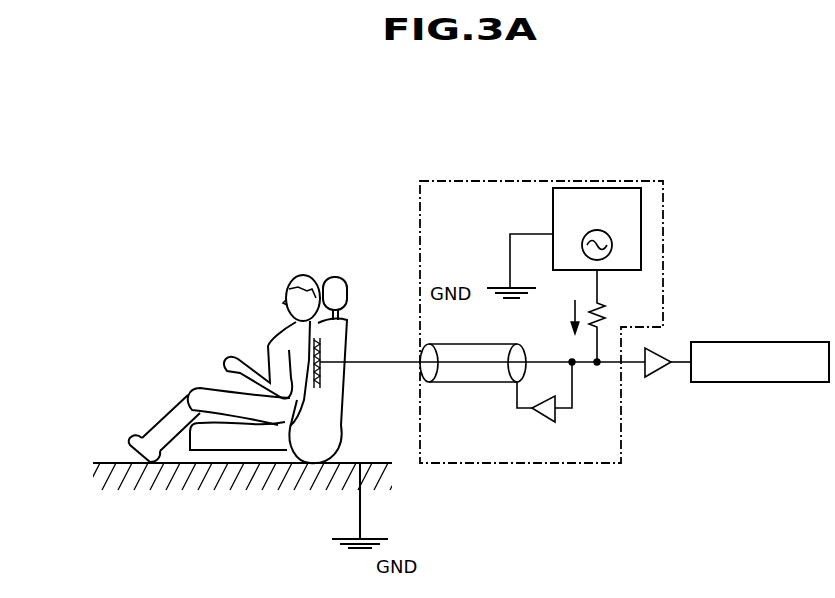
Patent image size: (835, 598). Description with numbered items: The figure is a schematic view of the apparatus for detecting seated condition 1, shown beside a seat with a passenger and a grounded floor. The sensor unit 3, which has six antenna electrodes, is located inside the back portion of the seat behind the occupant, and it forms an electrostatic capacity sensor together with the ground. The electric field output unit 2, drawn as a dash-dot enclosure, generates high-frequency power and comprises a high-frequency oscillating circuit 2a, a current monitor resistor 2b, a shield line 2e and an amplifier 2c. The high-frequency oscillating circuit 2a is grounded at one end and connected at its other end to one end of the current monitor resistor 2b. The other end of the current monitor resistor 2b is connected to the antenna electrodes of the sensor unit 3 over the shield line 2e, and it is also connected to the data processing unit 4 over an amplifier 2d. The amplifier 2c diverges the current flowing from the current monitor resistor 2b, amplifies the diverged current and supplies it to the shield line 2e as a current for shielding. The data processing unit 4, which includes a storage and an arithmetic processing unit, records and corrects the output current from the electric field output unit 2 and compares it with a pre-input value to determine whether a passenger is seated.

The apparatus for detecting seated condition 1 is at (574, 275).
The electric field output unit 2 is at (583, 182).
The high-frequency oscillating circuit 2a is at (641, 240).
The current monitor resistor 2b is at (605, 318).
The amplifier 2c is at (545, 424).
The amplifier 2d is at (652, 370).
The shield line 2e is at (455, 385).
The sensor unit 3 is at (328, 343).
The data processing unit 4 is at (795, 342).